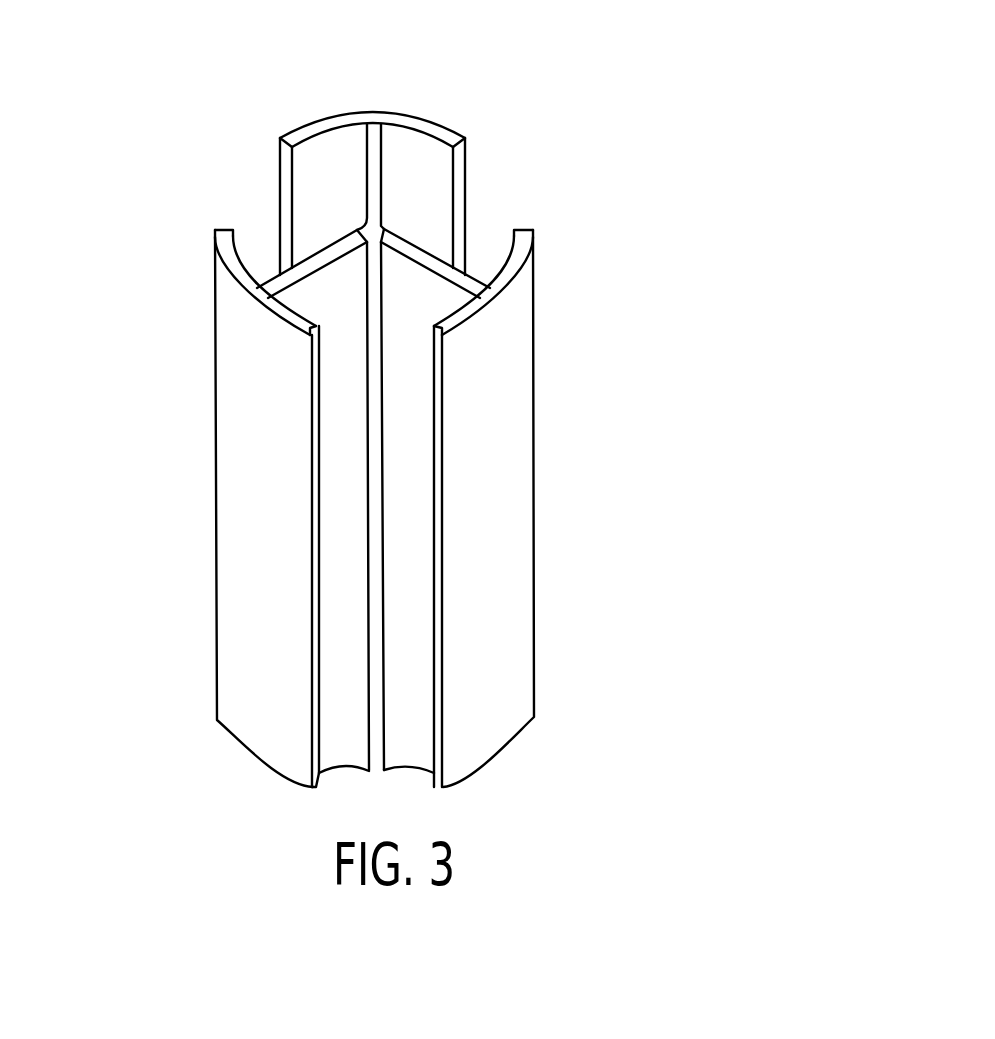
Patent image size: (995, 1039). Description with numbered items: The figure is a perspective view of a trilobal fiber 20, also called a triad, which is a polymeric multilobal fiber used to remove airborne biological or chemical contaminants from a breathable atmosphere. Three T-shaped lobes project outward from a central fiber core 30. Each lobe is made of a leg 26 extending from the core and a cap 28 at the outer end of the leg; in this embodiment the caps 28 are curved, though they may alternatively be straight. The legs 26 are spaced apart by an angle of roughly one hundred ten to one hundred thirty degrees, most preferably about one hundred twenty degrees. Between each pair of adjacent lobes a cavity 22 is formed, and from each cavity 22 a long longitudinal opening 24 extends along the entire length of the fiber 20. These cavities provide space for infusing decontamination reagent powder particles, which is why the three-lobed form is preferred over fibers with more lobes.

The trilobal fiber 20 is at (111, 547).
The cavity 22 is at (343, 182).
The longitudinal opening 24 is at (263, 213).
The leg 26 is at (282, 275).
The cap 28 is at (503, 600).
The central fiber core 30 is at (373, 230).